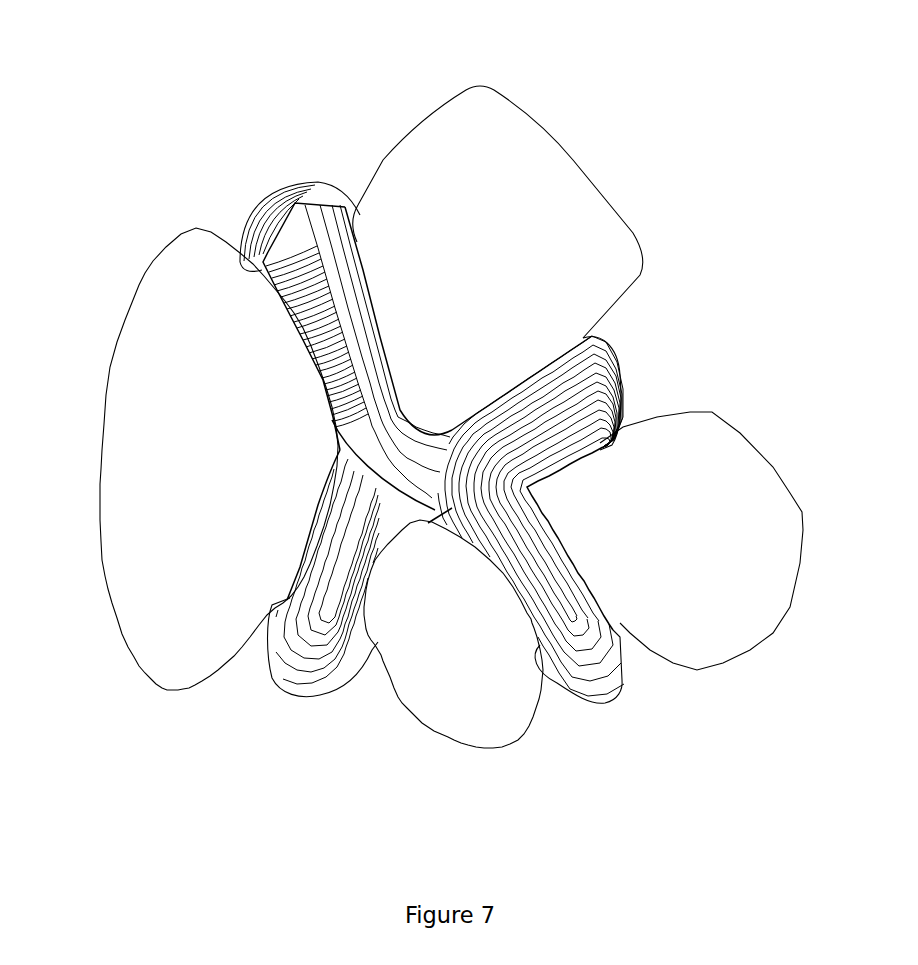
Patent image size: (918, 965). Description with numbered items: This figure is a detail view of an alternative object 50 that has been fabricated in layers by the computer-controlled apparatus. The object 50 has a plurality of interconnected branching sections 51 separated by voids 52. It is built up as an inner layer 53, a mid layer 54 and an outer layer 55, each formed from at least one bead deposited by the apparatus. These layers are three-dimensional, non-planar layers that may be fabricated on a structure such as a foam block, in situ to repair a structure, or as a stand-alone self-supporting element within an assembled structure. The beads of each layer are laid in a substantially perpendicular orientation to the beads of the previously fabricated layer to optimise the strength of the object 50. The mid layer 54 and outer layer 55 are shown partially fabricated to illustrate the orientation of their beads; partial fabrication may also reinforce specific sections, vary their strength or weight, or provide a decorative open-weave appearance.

The object 50 is at (188, 126).
The branching sections 51 is at (279, 159).
The voids 52 is at (502, 243).
The inner layer 53 is at (277, 238).
The mid layer 54 is at (365, 328).
The outer layer 55 is at (517, 489).